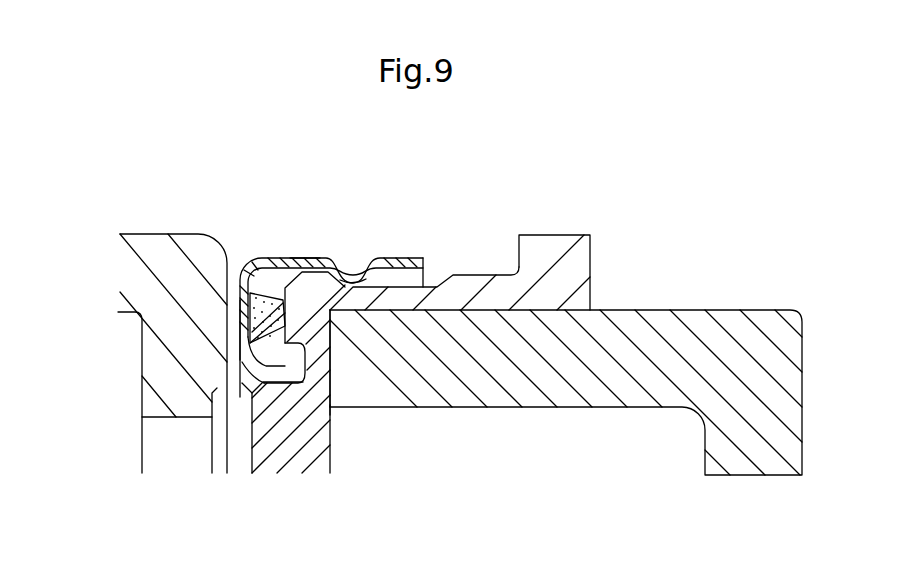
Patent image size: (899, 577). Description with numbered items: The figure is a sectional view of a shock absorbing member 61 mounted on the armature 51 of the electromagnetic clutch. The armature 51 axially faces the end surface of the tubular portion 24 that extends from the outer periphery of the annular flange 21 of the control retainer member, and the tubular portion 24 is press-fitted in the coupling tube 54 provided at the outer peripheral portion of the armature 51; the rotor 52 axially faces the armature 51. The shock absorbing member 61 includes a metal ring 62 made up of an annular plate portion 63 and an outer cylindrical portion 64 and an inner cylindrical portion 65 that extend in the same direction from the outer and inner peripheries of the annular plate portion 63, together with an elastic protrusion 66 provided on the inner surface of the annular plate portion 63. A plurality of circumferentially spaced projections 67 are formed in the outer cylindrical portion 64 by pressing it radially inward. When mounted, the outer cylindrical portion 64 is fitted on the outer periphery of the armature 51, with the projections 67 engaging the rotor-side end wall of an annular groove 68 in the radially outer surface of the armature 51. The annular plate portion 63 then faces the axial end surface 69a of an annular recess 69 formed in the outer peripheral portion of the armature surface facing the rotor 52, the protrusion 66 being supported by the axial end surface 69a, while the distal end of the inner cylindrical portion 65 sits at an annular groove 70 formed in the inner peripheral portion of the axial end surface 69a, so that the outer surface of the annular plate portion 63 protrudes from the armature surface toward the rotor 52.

The annular flange 21 is at (683, 347).
The tubular portion 24 is at (500, 370).
The armature 51 is at (322, 463).
The rotor 52 is at (175, 385).
The coupling tube 54 is at (552, 253).
The shock absorbing member 61 is at (266, 258).
The metal ring 62 is at (287, 258).
The annular plate portion 63 is at (242, 305).
The outer cylindrical portion 64 is at (318, 259).
The inner cylindrical portion 65 is at (291, 380).
The elastic protrusion 66 is at (262, 319).
The projections 67 is at (357, 268).
The annular groove 68 is at (449, 278).
The annular recess 69 is at (240, 300).
The axial end surface 69a is at (282, 365).
The annular groove 70 is at (330, 412).